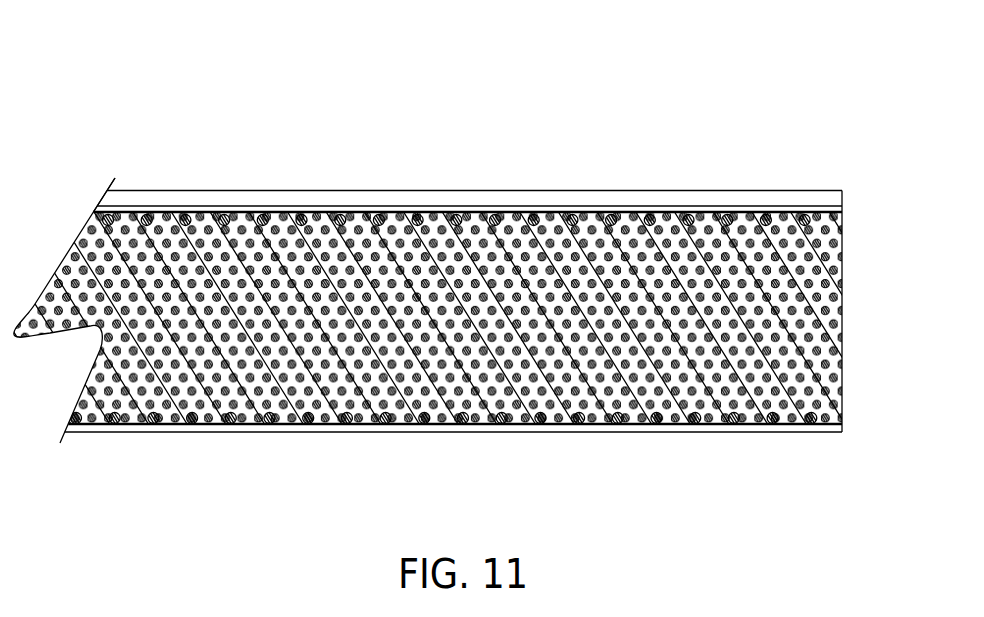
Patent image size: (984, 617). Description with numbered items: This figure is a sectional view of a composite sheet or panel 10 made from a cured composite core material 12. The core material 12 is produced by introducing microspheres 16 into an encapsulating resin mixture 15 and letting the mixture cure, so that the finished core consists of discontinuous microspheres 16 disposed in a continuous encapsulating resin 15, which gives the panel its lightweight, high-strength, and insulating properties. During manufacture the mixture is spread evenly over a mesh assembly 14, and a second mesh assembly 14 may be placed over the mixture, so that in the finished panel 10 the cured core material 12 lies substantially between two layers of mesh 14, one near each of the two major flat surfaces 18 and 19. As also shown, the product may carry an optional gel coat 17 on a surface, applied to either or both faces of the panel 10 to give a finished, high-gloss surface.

The sheet or panel 10 is at (820, 66).
The composite core material 12 is at (833, 337).
The mesh assembly 14 is at (815, 223).
The encapsulating resin mixture 15 is at (486, 228).
The microspheres 16 is at (432, 229).
The gel coat 17 is at (108, 195).
The major surface 18 is at (777, 190).
The major surface 19 is at (775, 433).